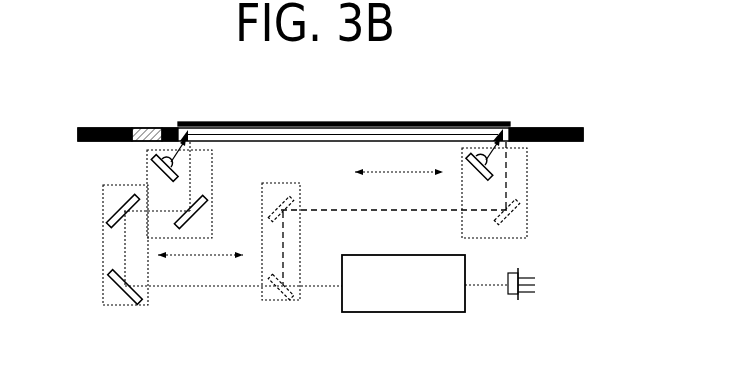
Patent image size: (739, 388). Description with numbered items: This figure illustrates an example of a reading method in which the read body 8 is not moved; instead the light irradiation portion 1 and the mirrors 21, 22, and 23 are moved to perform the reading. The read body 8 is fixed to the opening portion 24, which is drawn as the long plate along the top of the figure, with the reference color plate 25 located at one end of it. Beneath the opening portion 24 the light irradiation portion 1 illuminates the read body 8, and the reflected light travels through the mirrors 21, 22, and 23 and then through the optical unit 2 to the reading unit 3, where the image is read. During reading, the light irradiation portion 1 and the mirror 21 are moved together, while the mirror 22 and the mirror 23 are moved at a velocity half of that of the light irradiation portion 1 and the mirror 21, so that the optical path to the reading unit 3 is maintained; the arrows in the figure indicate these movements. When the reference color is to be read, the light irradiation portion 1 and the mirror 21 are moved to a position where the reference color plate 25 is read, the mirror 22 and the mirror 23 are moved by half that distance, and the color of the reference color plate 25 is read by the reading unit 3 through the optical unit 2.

The light irradiation portion 1 is at (152, 159).
The optical unit 2 is at (410, 312).
The reading unit 3 is at (511, 297).
The read body 8 is at (483, 121).
The mirror 21 is at (204, 205).
The mirror 22 is at (110, 217).
The mirror 23 is at (112, 289).
The opening portion 24 is at (379, 121).
The reference color plate 25 is at (144, 127).